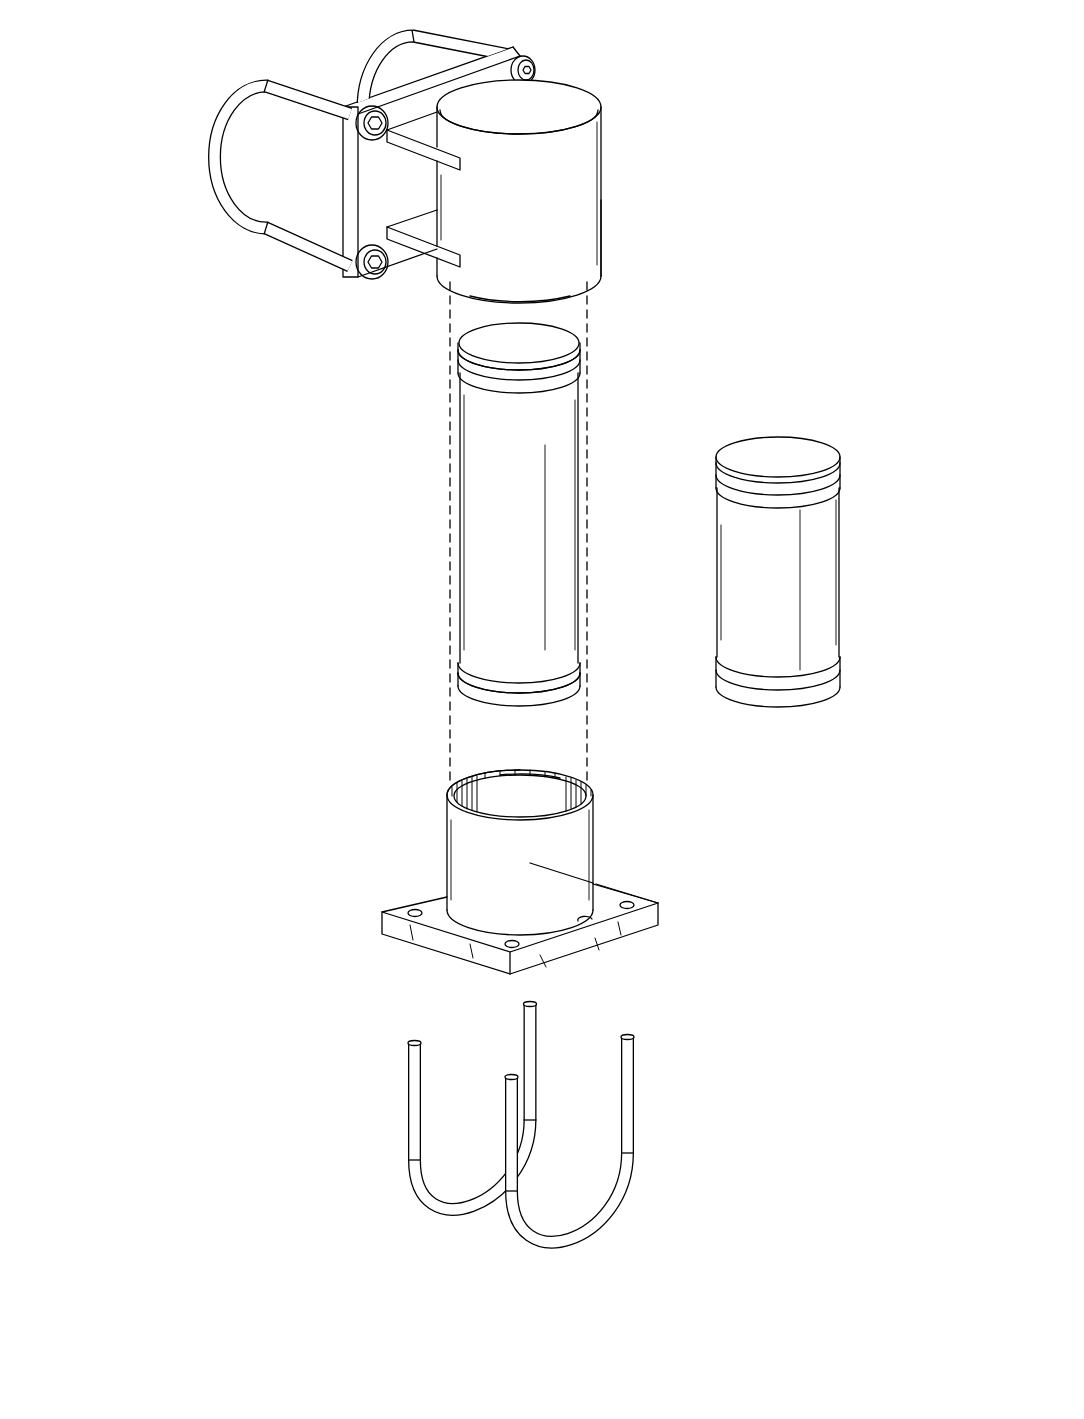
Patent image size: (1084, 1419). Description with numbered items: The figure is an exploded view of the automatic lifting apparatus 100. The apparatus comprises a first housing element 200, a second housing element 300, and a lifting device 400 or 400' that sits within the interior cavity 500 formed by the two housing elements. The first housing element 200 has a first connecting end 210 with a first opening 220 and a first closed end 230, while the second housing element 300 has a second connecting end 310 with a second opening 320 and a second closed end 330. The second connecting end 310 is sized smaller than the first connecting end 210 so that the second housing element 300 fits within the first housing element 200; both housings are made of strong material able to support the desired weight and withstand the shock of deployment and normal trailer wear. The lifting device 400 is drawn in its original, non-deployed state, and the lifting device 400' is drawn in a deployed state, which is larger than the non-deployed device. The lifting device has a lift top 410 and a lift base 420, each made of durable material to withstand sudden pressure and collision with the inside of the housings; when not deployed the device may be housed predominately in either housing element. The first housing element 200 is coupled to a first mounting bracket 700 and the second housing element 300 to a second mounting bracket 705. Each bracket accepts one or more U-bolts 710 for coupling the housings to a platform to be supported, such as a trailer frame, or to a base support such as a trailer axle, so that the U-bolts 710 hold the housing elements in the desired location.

The automatic lifting apparatus 100 is at (212, 630).
The first housing element 200 is at (603, 101).
The first connecting end 210 is at (603, 280).
The first opening 220 is at (538, 305).
The first closed end 230 is at (553, 98).
The second housing element 300 is at (596, 836).
The second connecting end 310 is at (447, 797).
The second opening 320 is at (541, 790).
The second closed end 330 is at (590, 921).
The lifting device 400 is at (810, 574).
The lifting device (deployed) 400' is at (482, 514).
The lift top 410 is at (470, 368).
The lift base 420 is at (478, 683).
The interior cavity 500 is at (468, 742).
The first mounting bracket 700 is at (393, 183).
The second mounting bracket 705 is at (430, 940).
The U-bolts 710 is at (361, 57).